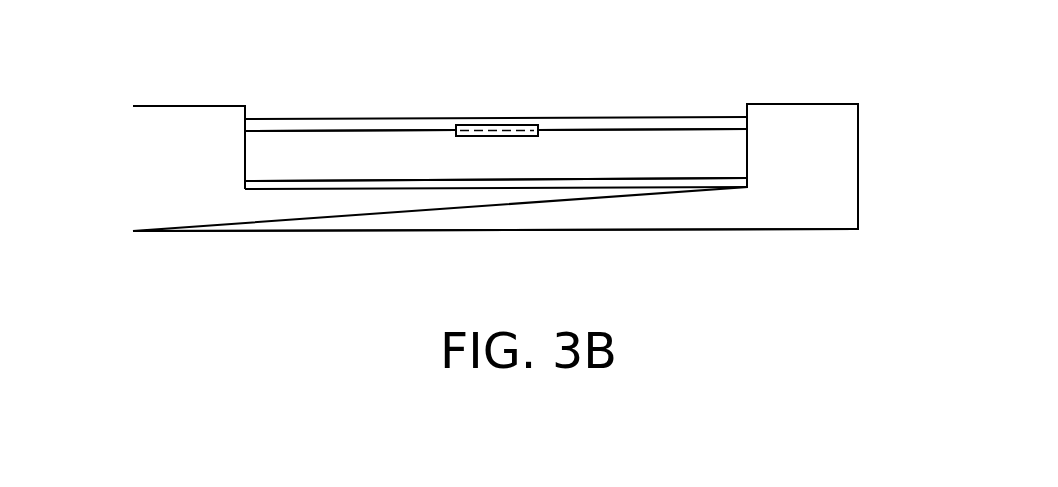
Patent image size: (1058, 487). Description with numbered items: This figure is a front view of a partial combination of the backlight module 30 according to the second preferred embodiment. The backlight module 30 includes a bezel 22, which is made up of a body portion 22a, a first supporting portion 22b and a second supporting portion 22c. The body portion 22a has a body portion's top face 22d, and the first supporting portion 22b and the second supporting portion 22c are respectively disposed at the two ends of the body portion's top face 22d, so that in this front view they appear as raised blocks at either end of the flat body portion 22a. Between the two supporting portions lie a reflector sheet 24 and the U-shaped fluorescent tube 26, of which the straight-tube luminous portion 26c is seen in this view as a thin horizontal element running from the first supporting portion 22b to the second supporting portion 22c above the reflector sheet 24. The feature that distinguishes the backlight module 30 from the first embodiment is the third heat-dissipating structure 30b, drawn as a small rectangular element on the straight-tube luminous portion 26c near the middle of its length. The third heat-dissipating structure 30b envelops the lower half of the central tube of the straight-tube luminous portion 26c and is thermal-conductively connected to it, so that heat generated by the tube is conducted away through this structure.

The backlight module 30 is at (897, 30).
The bezel 22 is at (870, 115).
The body portion 22a is at (600, 221).
The first supporting portion 22b is at (847, 197).
The second supporting portion 22c is at (142, 162).
The body portion's top face 22d is at (430, 189).
The reflector sheet 24 is at (372, 183).
The U-shaped fluorescent tube 26 is at (717, 113).
The straight-tube luminous portion 26c is at (616, 125).
The third heat-dissipating structure 30b is at (518, 137).